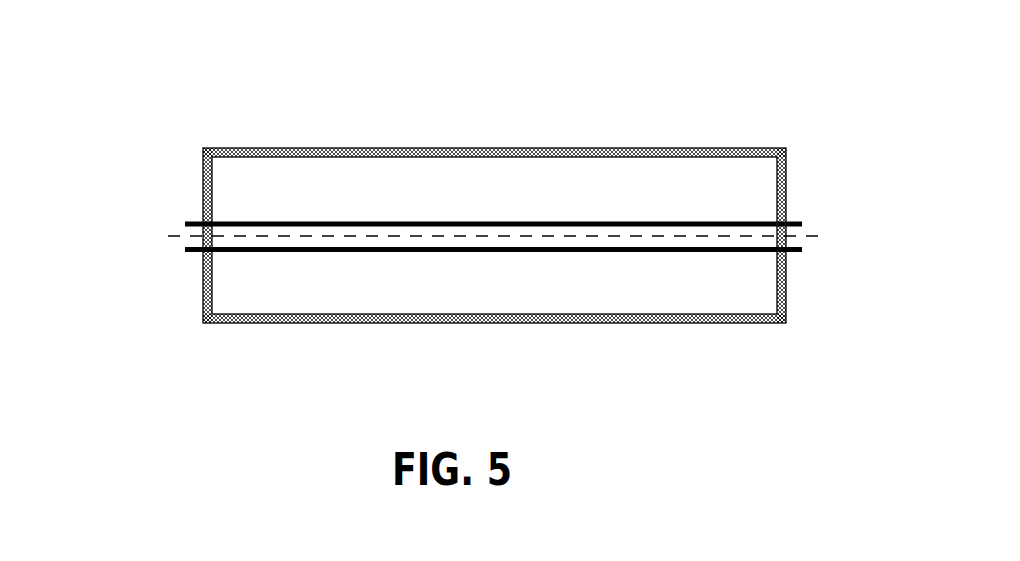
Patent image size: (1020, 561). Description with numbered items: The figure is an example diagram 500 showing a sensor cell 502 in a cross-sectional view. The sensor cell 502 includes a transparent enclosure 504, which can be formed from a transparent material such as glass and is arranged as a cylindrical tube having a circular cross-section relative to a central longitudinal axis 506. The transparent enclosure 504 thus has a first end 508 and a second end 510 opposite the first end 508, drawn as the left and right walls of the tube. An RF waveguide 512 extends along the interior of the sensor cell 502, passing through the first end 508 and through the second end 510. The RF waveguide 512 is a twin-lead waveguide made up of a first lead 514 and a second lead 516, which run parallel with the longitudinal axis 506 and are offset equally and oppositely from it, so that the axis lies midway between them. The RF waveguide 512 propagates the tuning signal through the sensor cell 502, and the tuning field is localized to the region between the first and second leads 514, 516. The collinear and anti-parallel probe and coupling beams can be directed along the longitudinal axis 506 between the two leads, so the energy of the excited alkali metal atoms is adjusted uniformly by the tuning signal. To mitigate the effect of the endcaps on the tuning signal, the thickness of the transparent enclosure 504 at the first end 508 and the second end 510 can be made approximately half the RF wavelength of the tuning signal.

The diagram 500 is at (117, 70).
The sensor cell 502 is at (415, 345).
The transparent enclosure 504 is at (670, 323).
The central longitudinal axis 506 is at (176, 236).
The first end 508 is at (185, 180).
The second end 510 is at (805, 190).
The RF waveguide 512 is at (418, 212).
The first lead 514 is at (350, 221).
The second lead 516 is at (360, 251).